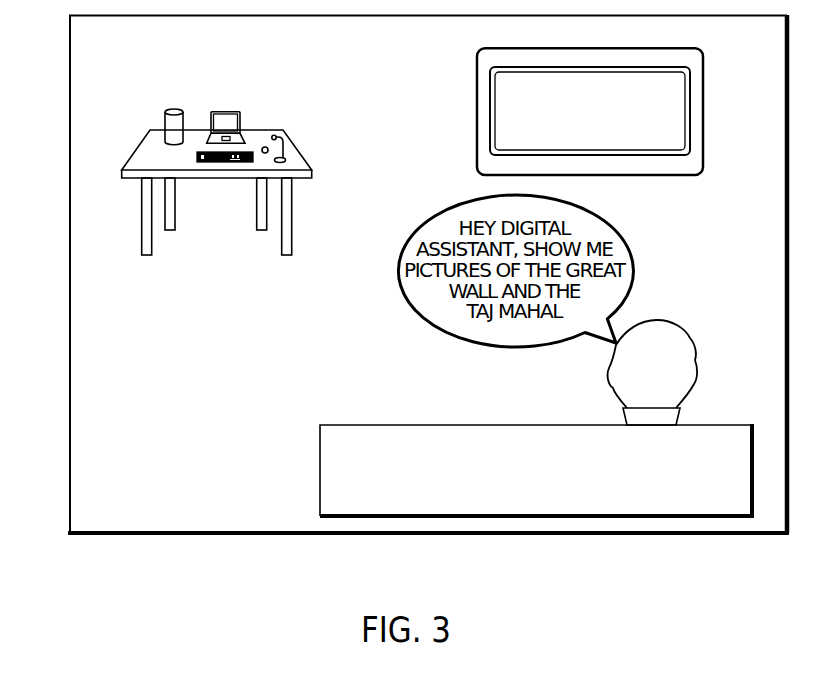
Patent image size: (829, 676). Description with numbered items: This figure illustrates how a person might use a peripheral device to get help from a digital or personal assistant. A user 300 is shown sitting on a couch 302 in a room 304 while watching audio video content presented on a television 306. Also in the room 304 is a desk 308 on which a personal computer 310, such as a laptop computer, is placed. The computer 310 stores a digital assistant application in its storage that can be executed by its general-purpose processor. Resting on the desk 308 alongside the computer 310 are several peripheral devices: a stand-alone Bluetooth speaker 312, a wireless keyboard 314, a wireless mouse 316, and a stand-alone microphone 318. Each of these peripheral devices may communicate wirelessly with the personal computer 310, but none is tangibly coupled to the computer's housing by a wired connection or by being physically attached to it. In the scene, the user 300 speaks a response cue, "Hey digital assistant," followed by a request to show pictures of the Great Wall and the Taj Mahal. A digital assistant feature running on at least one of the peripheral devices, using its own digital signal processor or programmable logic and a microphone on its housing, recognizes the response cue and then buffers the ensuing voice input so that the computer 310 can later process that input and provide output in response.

The user 300 is at (611, 371).
The couch 302 is at (320, 470).
The room 304 is at (70, 273).
The television 306 is at (477, 112).
The desk 308 is at (138, 151).
The personal computer 310 is at (225, 111).
The stand-alone Bluetooth speaker 312 is at (165, 121).
The wireless keyboard 314 is at (197, 160).
The wireless mouse 316 is at (264, 147).
The stand-alone microphone 318 is at (286, 160).